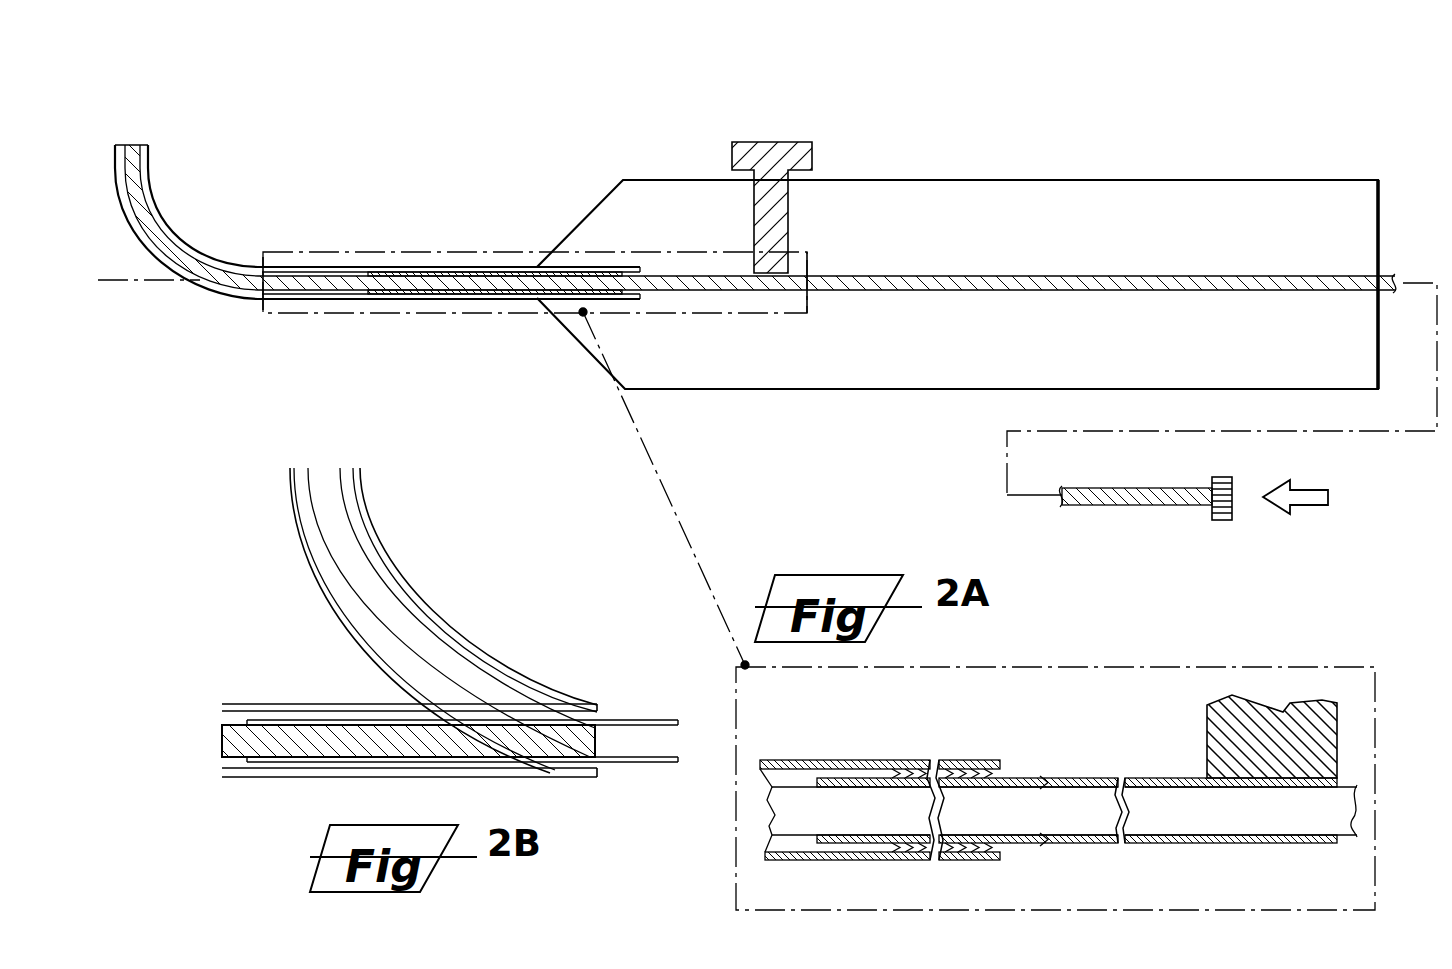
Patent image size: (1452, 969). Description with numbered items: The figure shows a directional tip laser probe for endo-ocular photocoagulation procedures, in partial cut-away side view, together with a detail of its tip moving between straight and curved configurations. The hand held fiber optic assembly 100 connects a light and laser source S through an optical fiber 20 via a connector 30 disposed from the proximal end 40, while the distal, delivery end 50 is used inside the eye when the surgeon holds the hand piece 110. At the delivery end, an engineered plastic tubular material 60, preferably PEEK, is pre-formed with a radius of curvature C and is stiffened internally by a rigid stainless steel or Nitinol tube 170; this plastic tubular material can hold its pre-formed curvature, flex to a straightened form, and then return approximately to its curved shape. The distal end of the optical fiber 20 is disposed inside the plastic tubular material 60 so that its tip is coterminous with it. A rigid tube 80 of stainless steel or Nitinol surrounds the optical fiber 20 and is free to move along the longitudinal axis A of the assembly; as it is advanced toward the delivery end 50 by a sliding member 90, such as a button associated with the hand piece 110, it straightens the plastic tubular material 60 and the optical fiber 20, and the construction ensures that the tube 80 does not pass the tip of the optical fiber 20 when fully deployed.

In FIG. 2A, the optical fiber 20 is at (897, 290).
In FIG. 2B, the optical fiber 20 is at (373, 627).
In FIG. 2A, the connector 30 is at (1215, 520).
In FIG. 2A, the proximal end 40 is at (1380, 215).
In FIG. 2A, the distal, delivery end 50 is at (127, 118).
In FIG. 2A, the plastic tubular material 60 is at (157, 254).
In FIG. 2B, the plastic tubular material 60 is at (370, 540).
In FIG. 2A, the tube 80 is at (360, 295).
In FIG. 2B, the tube 80 is at (637, 720).
In FIG. 2A, the sliding member 90 is at (775, 142).
In FIG. 2A, the hand held fiber optic assembly 100 is at (658, 135).
In FIG. 2A, the hand piece 110 is at (990, 180).
In FIG. 2A, the tube 170 is at (624, 296).
In FIG. 2A, the longitudinal axis A is at (120, 282).
In FIG. 2A, the radius of curvature C is at (187, 283).
In FIG. 2A, the light and laser source S is at (1302, 508).